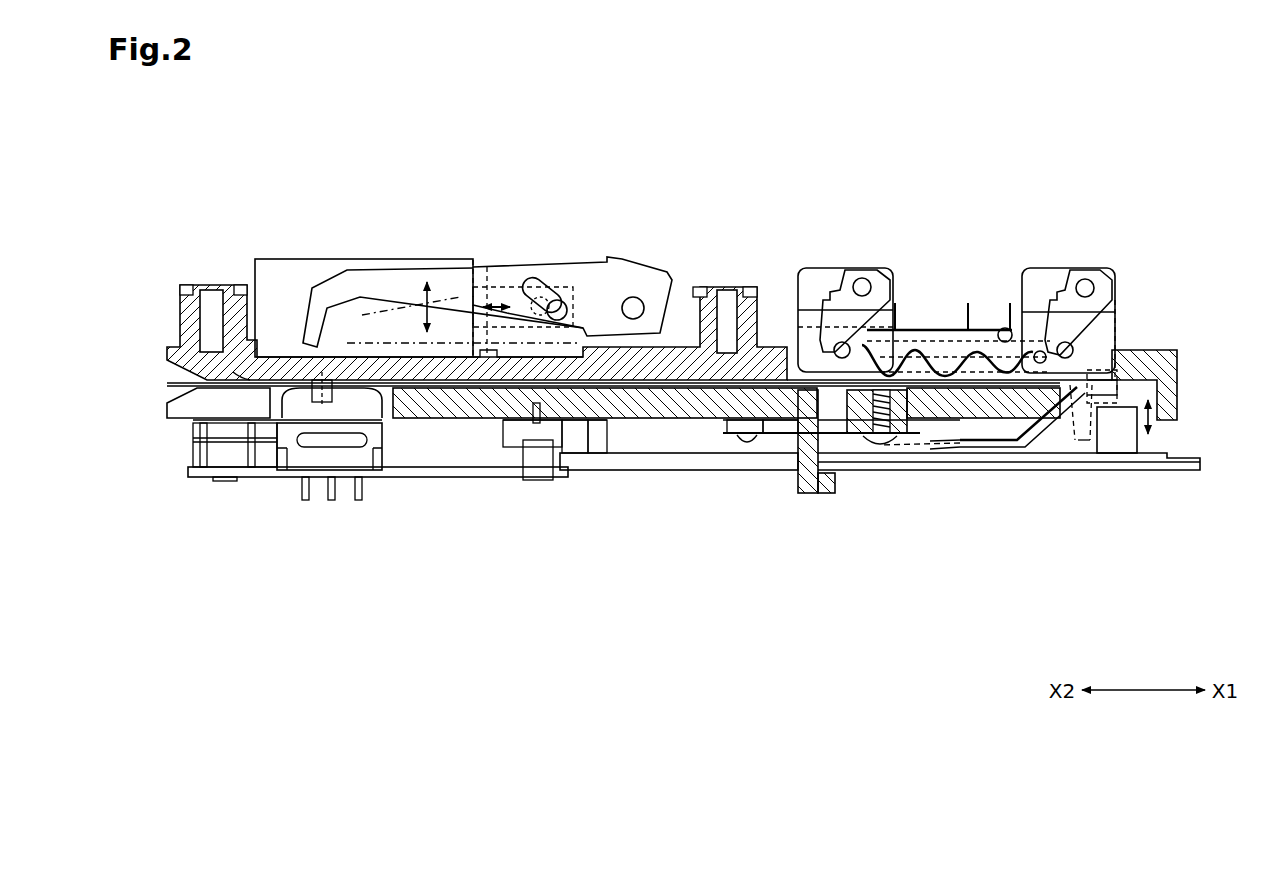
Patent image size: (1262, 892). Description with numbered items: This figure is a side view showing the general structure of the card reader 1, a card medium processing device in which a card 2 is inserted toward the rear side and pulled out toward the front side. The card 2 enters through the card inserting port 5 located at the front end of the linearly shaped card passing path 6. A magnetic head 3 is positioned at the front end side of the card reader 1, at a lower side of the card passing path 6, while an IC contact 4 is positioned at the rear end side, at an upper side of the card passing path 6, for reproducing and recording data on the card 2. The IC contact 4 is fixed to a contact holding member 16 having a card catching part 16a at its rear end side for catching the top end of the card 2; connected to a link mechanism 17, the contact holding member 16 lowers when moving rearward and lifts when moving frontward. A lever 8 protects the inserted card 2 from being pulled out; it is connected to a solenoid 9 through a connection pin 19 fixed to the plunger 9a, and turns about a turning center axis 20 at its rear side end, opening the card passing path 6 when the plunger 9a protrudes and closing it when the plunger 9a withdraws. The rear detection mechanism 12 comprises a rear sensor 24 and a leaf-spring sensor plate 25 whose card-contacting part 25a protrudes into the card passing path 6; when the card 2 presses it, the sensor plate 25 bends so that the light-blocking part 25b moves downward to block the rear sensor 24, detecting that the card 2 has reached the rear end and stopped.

The card reader 1 is at (981, 137).
The card 2 is at (808, 377).
The magnetic head 3 is at (387, 460).
The IC contact 4 is at (943, 320).
The card inserting port 5 is at (158, 378).
The card passing path 6 is at (240, 380).
The lever 8 is at (362, 315).
The solenoid 9 is at (295, 258).
The plunger 9a is at (490, 290).
The rear detection mechanism 12 is at (1185, 499).
The contact holding member 16 is at (1123, 367).
The card catching part 16a is at (1080, 443).
The link mechanism 17 is at (863, 246).
The connection pin 19 is at (542, 280).
The turning center axis 20 is at (632, 297).
The rear sensor 24 is at (1137, 448).
The sensor plate 25 is at (987, 447).
The card-contacting part 25a is at (1127, 347).
The light-blocking part 25b is at (1120, 450).